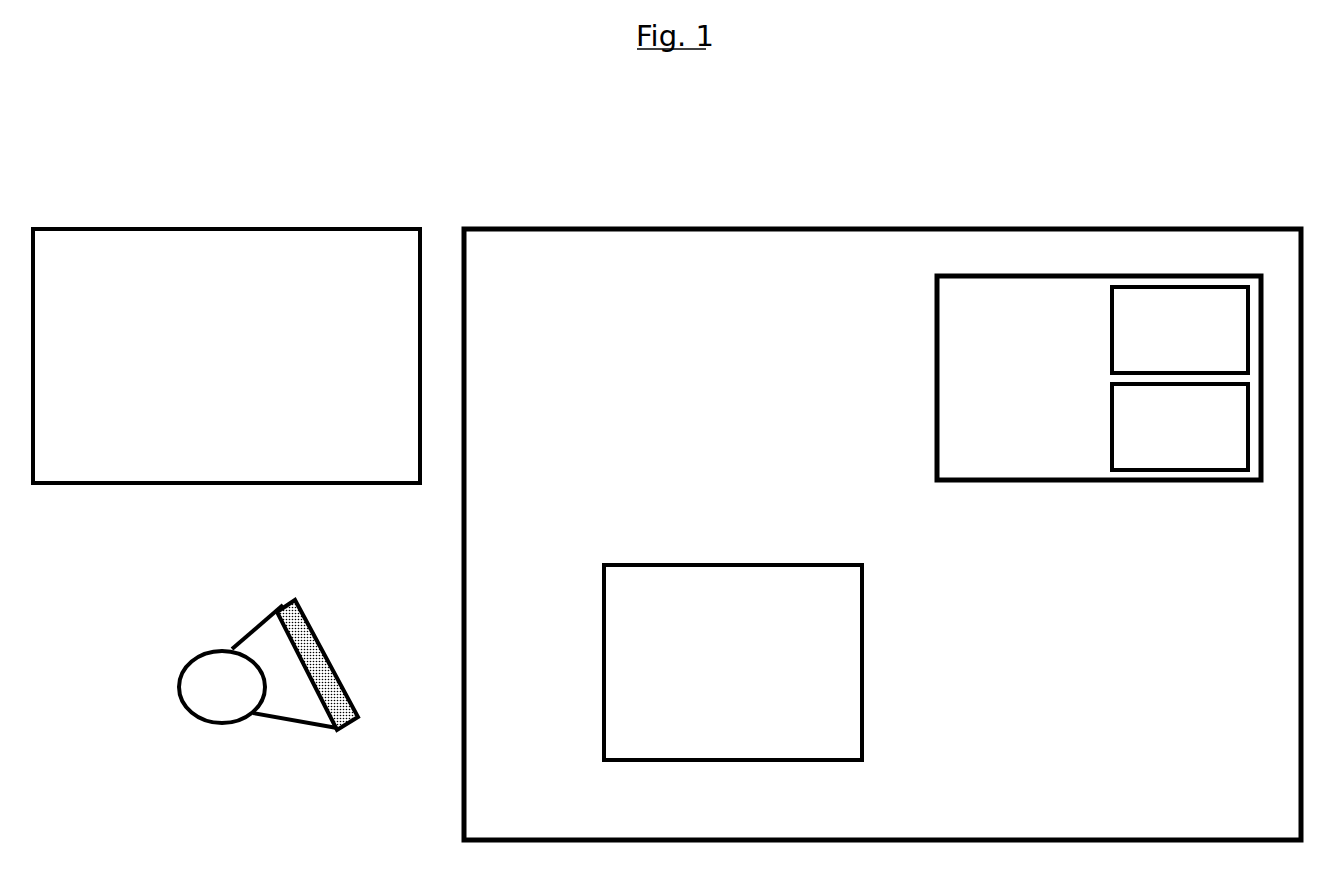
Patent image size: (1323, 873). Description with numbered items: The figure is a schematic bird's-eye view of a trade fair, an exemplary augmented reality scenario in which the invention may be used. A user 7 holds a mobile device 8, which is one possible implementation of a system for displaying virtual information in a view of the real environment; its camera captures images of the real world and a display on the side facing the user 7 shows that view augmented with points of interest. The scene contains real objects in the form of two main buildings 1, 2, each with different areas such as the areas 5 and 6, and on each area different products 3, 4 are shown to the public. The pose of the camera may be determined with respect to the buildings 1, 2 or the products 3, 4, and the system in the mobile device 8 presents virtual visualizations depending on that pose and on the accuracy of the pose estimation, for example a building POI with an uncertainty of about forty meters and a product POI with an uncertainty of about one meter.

The main building 1 is at (226, 356).
The main building 2 is at (882, 534).
The product 3 is at (1180, 330).
The product 4 is at (1180, 427).
The area 5 is at (733, 662).
The area 6 is at (1099, 378).
The user 7 is at (231, 666).
The mobile device 8 is at (322, 682).